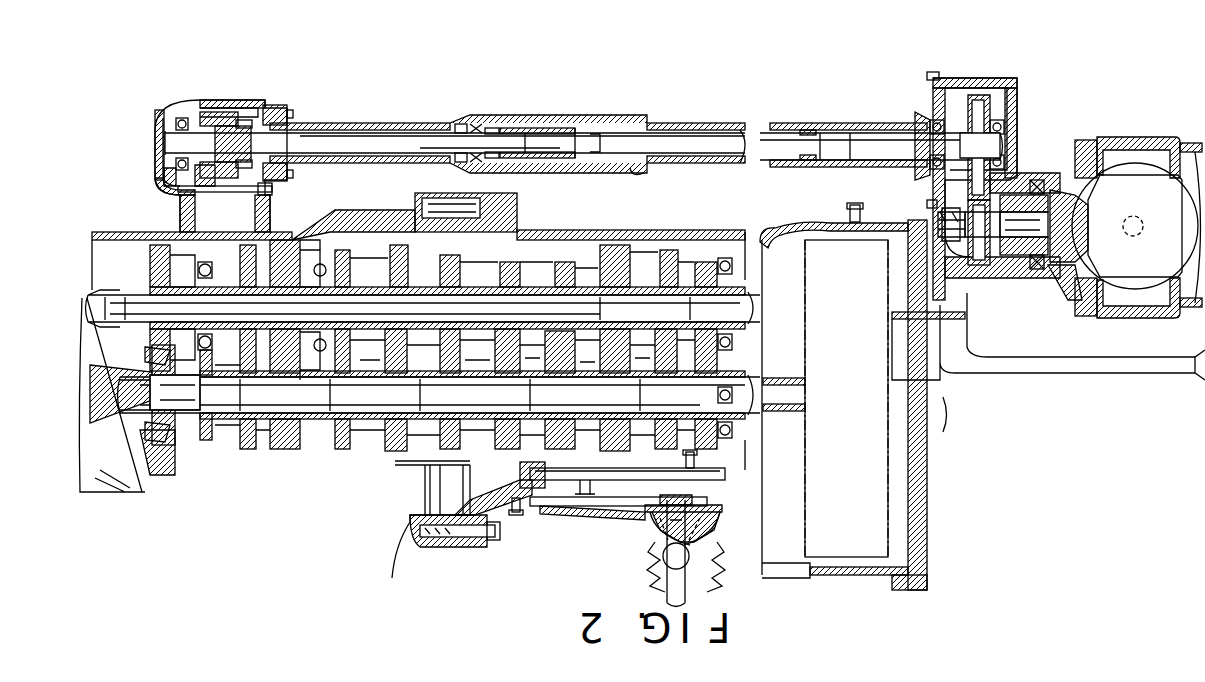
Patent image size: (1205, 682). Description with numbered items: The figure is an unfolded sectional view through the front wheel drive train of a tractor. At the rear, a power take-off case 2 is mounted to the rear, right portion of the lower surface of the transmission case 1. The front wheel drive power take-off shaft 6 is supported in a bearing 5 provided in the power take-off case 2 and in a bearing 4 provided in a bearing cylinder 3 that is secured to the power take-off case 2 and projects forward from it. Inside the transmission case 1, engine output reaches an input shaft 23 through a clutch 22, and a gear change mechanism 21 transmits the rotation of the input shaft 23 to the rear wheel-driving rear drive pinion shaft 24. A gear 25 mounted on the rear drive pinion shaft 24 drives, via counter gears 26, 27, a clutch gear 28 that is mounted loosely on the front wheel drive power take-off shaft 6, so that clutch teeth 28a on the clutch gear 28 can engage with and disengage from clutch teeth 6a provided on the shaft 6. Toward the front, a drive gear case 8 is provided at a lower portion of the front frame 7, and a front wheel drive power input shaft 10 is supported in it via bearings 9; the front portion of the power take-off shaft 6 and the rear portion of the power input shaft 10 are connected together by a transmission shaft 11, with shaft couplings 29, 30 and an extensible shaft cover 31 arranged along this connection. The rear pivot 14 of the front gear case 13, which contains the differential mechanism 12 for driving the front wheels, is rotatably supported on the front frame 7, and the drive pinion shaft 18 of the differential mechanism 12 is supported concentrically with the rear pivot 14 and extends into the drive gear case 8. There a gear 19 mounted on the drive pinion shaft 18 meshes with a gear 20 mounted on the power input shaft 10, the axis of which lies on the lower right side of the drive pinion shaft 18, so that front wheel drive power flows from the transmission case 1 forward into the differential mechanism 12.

The transmission case 1 is at (598, 230).
The power take-off case 2 is at (270, 104).
The bearing cylinder 3 is at (346, 123).
The bearing 4 is at (465, 115).
The bearing 5 is at (165, 108).
The front wheel drive power take-off shaft 6 is at (930, 115).
The clutch teeth 6a is at (240, 120).
The front frame 7 is at (968, 373).
The drive gear case 8 is at (965, 78).
The bearings 9 is at (372, 132).
The front wheel drive power input shaft 10 is at (868, 133).
The transmission shaft 11 is at (776, 122).
The differential mechanism 12 is at (1068, 295).
The front gear case 13 is at (1118, 135).
The rear pivot 14 is at (1018, 256).
The drive pinion shaft 18 is at (1010, 238).
The gear 19 is at (982, 265).
The gear 20 is at (980, 95).
The gear change mechanism 21 is at (510, 455).
The clutch 22 is at (858, 557).
The input shaft 23 is at (730, 430).
The rear drive pinion shaft 24 is at (130, 465).
The gear 25 is at (222, 450).
The counter gear 26 is at (256, 257).
The counter gear 27 is at (160, 252).
The clutch gear 28 is at (212, 112).
The clutch teeth 28a is at (228, 126).
The shaft coupling 29 is at (808, 130).
The shaft coupling 30 is at (541, 128).
The extensible shaft cover 31 is at (626, 123).